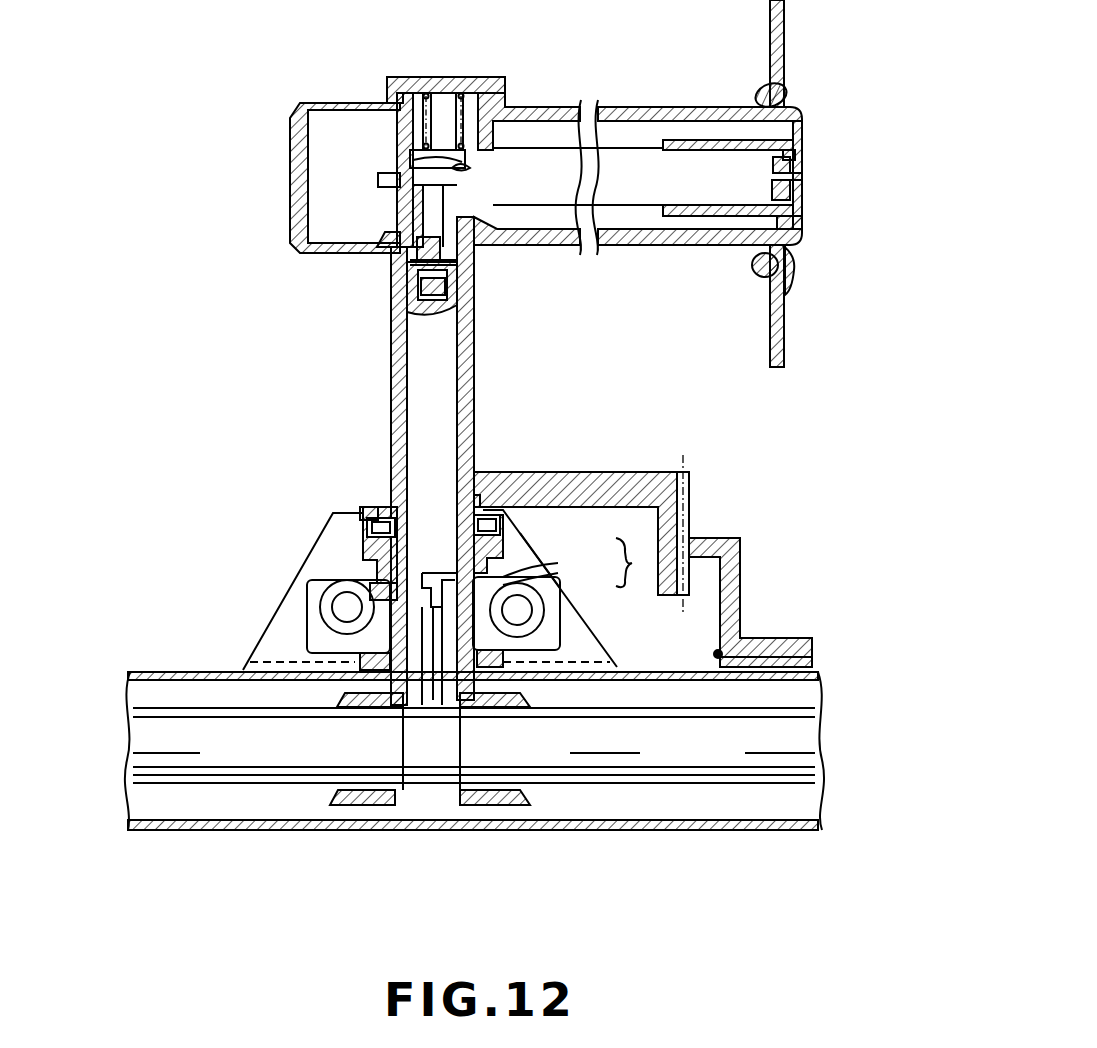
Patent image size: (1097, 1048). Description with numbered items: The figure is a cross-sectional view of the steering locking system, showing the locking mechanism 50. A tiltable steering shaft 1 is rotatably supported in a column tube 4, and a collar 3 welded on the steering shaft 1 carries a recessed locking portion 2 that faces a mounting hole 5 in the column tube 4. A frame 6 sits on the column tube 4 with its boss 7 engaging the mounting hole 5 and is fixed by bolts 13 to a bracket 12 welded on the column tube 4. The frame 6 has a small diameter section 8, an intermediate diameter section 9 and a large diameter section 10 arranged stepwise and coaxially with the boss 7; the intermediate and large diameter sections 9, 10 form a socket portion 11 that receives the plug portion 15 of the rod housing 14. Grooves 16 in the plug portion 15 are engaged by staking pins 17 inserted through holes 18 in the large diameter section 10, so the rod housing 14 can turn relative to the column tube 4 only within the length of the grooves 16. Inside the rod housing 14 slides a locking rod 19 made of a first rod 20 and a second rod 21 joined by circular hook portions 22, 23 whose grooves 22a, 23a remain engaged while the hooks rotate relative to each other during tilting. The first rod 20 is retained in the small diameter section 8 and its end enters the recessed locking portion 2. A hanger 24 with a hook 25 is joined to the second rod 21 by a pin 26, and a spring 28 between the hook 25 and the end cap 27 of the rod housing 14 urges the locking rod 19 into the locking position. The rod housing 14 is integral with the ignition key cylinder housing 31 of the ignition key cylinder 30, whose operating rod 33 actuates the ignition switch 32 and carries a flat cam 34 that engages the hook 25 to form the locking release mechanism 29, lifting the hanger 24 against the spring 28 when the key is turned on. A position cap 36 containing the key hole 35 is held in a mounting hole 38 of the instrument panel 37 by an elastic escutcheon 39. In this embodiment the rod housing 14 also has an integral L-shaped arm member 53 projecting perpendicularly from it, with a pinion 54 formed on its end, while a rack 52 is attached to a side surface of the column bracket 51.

The tiltable steering shaft 1 is at (740, 700).
The recessed locking portion 2 is at (476, 705).
The collar 3 is at (492, 806).
The column tube 4 is at (672, 670).
The mounting hole 5 is at (372, 700).
The frame 6 is at (548, 540).
The boss 7 is at (498, 707).
The small diameter section 8 is at (597, 638).
The intermediate diameter section 9 is at (558, 573).
The large diameter section 10 is at (558, 562).
The socket portion 11 is at (639, 562).
The bracket 12 is at (282, 603).
The bolts 13 is at (334, 593).
The rod housing 14 is at (476, 380).
The plug portion 15 is at (477, 490).
The grooves 16 is at (387, 513).
The staking pins 17 is at (368, 515).
The holes 18 is at (368, 527).
The locking rod 19 is at (388, 383).
The first rod 20 is at (410, 708).
The second rod 21 is at (437, 338).
The hook portion 22 is at (444, 573).
The groove 22a is at (430, 705).
The hook portion 23 is at (312, 644).
The groove 23a is at (376, 584).
The hanger 24 is at (398, 256).
The hook 25 is at (423, 160).
The pin 26 is at (455, 268).
The end cap 27 is at (418, 77).
The spring 28 is at (423, 140).
The locking release mechanism 29 is at (408, 200).
The ignition key cylinder 30 is at (680, 262).
The ignition key cylinder housing 31 is at (630, 247).
The ignition switch 32 is at (320, 198).
The operating rod 33 is at (541, 150).
The flat cam 34 is at (468, 161).
The key hole 35 is at (806, 173).
The position cap 36 is at (798, 248).
The instrument panel 37 is at (786, 340).
The mounting hole 38 is at (760, 270).
The escutcheon 39 is at (792, 272).
The locking mechanism 50 is at (702, 516).
The column bracket 51 is at (814, 659).
The rack 52 is at (707, 540).
The arm member 53 is at (586, 472).
The pinion 54 is at (688, 480).